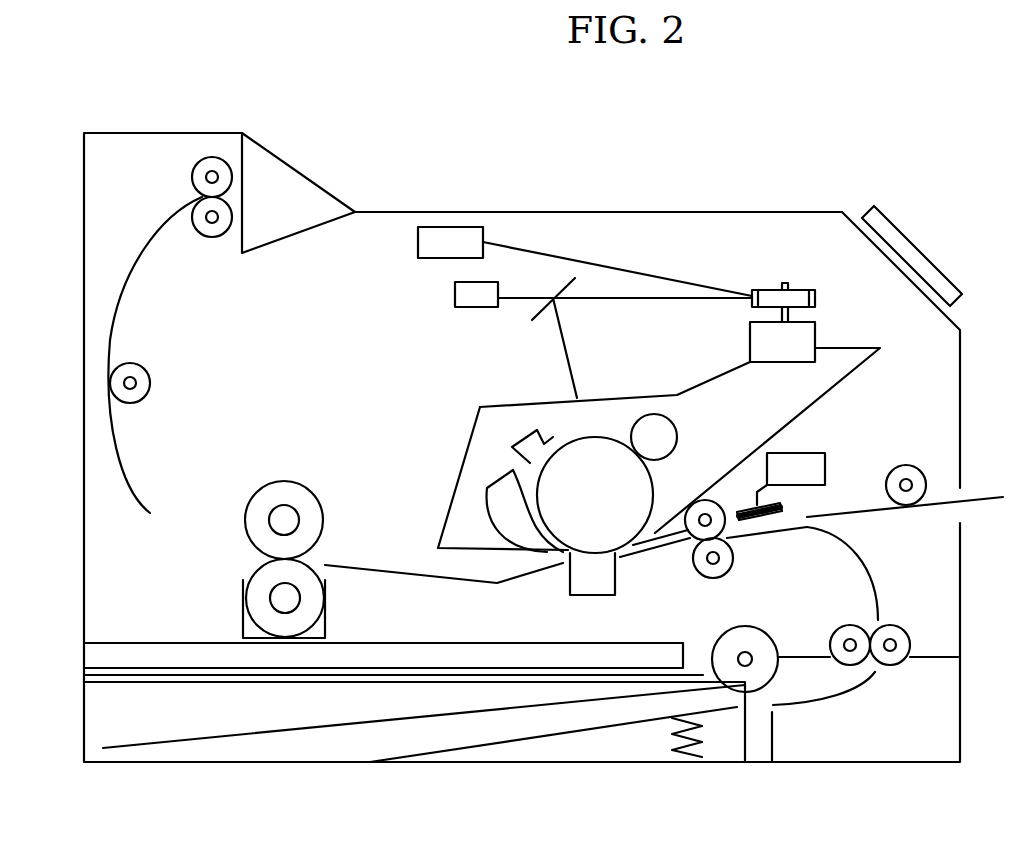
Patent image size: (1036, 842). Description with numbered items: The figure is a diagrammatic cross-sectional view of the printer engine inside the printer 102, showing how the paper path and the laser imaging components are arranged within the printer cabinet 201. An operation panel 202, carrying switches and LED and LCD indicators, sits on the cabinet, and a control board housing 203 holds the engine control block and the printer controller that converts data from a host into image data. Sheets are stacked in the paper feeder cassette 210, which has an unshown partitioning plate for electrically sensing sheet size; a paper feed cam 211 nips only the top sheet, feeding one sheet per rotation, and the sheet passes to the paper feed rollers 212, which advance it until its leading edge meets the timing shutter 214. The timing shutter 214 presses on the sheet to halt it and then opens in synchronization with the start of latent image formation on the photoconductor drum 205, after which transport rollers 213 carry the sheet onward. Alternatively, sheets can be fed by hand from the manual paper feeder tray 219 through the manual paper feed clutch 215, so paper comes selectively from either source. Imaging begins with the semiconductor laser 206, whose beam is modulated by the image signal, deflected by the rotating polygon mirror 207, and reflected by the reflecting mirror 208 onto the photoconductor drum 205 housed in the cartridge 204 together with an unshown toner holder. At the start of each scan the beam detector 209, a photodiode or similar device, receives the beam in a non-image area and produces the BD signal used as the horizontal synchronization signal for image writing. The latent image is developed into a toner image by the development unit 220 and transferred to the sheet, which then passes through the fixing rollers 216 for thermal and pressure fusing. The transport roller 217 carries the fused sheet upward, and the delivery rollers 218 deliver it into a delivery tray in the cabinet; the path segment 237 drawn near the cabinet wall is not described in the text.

The printer 102 is at (761, 205).
The printer cabinet 201 is at (655, 212).
The operation panel 202 is at (903, 238).
The control board housing 203 is at (478, 643).
The cartridge 204 is at (846, 348).
The photoconductor drum 205 is at (605, 437).
The semiconductor laser 206 is at (443, 227).
The rotating polygon mirror 207 is at (797, 290).
The reflecting mirror 208 is at (540, 320).
The beam detector 209 is at (455, 296).
The paper feeder cassette 210 is at (716, 746).
The paper feed cam 211 is at (713, 636).
The paper feed rollers 212 is at (908, 644).
The transport rollers 213 is at (733, 566).
The timing shutter 214 is at (813, 507).
The manual paper feed clutch 215 is at (925, 477).
The fixing rollers 216 is at (300, 482).
The transport roller 217 is at (150, 379).
The delivery rollers 218 is at (208, 157).
The manual paper feeder tray 219 is at (1000, 503).
The development unit 220 is at (678, 432).
The conveying path 237 is at (167, 355).